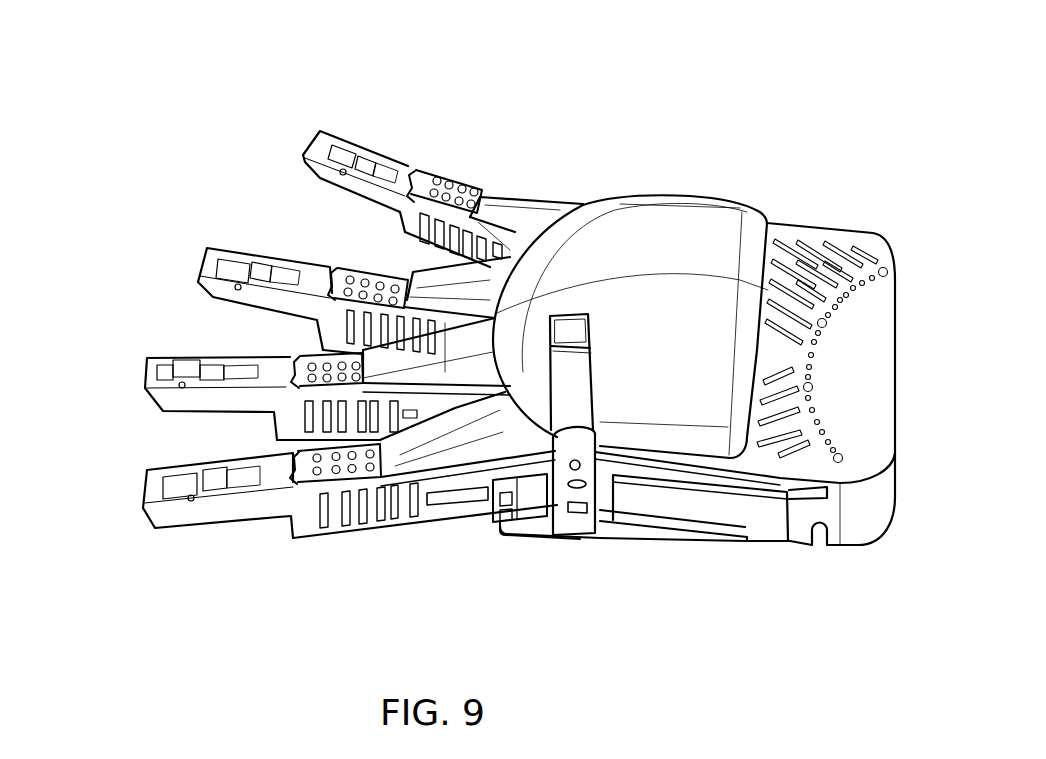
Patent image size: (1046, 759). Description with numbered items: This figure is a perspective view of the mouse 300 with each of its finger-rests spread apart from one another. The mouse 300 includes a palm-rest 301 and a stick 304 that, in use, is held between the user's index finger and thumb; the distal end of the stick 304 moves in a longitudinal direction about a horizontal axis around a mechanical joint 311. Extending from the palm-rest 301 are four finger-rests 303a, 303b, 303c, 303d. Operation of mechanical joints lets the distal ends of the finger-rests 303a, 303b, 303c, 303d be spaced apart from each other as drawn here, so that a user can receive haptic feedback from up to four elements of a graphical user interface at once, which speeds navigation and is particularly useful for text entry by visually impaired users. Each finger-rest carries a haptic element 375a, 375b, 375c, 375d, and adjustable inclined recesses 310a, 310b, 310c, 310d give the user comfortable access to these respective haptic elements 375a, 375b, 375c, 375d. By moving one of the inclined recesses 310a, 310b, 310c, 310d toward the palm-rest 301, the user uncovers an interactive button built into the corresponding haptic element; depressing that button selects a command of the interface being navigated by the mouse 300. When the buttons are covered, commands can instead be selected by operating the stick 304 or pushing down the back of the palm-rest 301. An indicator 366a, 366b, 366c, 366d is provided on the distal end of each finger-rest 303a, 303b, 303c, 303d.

The mouse 300 is at (170, 57).
The palm-rest 301 is at (698, 230).
The finger-rest 303a is at (304, 520).
The finger-rest 303b is at (292, 428).
The finger-rest 303c is at (334, 334).
The finger-rest 303d is at (410, 222).
The stick 304 is at (570, 327).
The inclined recess 310a is at (486, 412).
The inclined recess 310b is at (470, 340).
The inclined recess 310c is at (474, 262).
The inclined recess 310d is at (533, 200).
The mechanical joint 311 is at (578, 486).
The indicator 366a is at (147, 478).
The indicator 366b is at (147, 367).
The indicator 366c is at (207, 250).
The indicator 366d is at (302, 157).
The haptic element 375a is at (338, 527).
The haptic element 375b is at (322, 362).
The haptic element 375c is at (375, 275).
The haptic element 375d is at (447, 175).